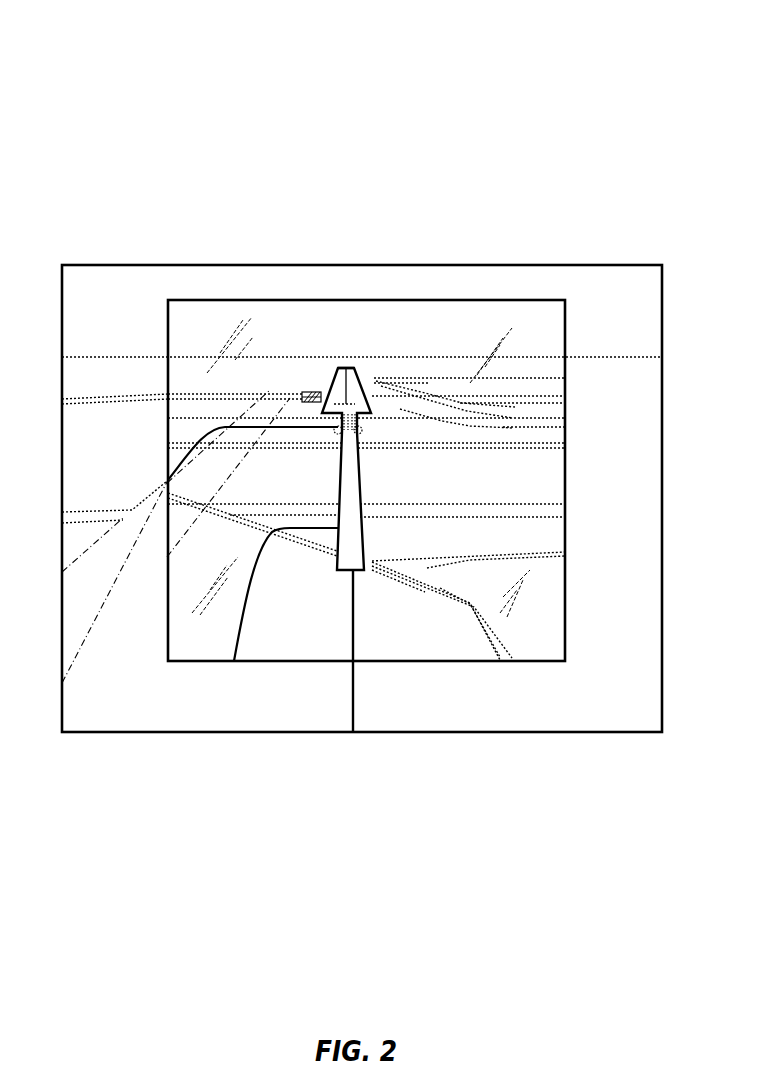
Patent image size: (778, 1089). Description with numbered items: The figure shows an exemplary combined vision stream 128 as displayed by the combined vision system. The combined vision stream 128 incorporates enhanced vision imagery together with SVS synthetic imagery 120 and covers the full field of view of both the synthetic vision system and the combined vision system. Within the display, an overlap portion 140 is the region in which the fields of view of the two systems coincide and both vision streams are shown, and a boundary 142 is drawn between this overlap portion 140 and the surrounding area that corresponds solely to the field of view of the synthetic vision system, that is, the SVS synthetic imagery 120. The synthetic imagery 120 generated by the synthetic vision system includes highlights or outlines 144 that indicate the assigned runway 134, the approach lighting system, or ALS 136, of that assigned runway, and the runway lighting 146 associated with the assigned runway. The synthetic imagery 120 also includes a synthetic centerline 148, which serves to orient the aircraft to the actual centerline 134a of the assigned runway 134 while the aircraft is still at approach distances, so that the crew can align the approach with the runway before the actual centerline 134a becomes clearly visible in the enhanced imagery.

The combined vision stream 128 is at (70, 73).
The SVS synthetic imagery 120 is at (121, 277).
The boundary 142 is at (250, 297).
The runway lighting 146 is at (318, 388).
The assigned runway 134 is at (432, 398).
The actual centerline 134a is at (348, 366).
The ALS 136 is at (168, 480).
The highlights or outlines 144 is at (234, 661).
The synthetic centerline 148 is at (368, 704).
The overlap portion 140 is at (468, 627).